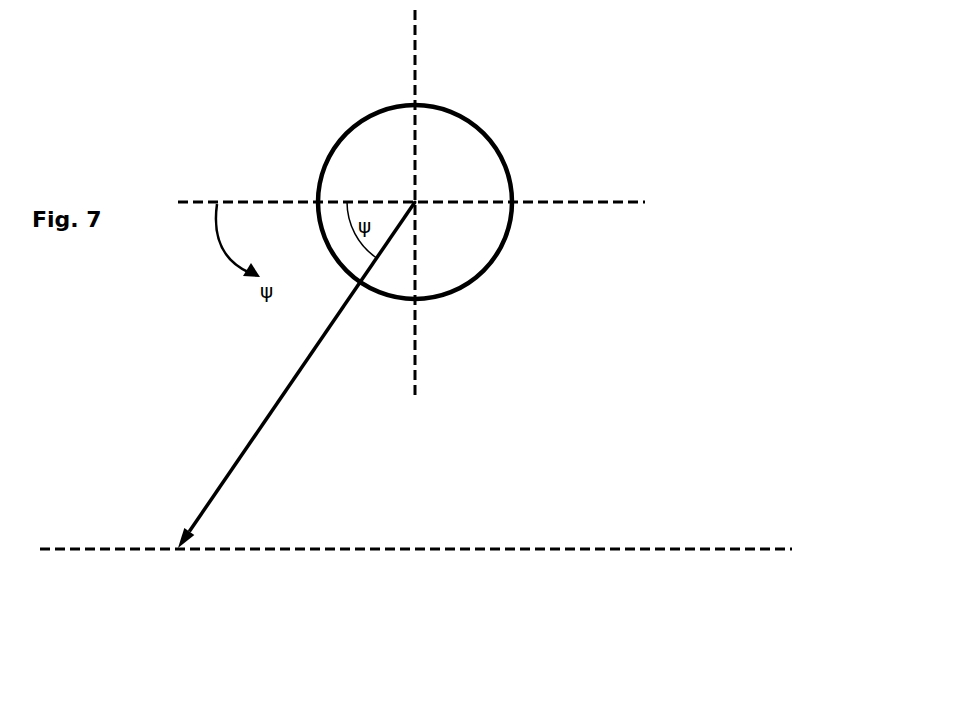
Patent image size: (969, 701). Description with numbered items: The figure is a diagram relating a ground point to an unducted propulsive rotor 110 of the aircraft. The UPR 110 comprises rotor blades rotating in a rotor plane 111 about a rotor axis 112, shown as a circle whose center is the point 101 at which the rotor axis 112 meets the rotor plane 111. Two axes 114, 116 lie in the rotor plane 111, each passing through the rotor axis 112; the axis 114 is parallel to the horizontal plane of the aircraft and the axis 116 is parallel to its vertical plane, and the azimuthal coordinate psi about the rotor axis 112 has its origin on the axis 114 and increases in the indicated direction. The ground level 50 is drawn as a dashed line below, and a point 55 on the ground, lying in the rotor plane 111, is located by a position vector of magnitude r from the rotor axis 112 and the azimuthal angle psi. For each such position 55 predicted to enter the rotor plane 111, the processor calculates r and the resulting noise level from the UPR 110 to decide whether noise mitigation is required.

The ground level 50 is at (630, 548).
The point in the rotor plane 55 is at (178, 546).
The point 101 is at (415, 202).
The unducted propulsive rotor 110 is at (507, 163).
The rotor plane 111 is at (526, 404).
The rotor axis 112 is at (415, 202).
The axis 114 is at (205, 200).
The axis 116 is at (417, 24).